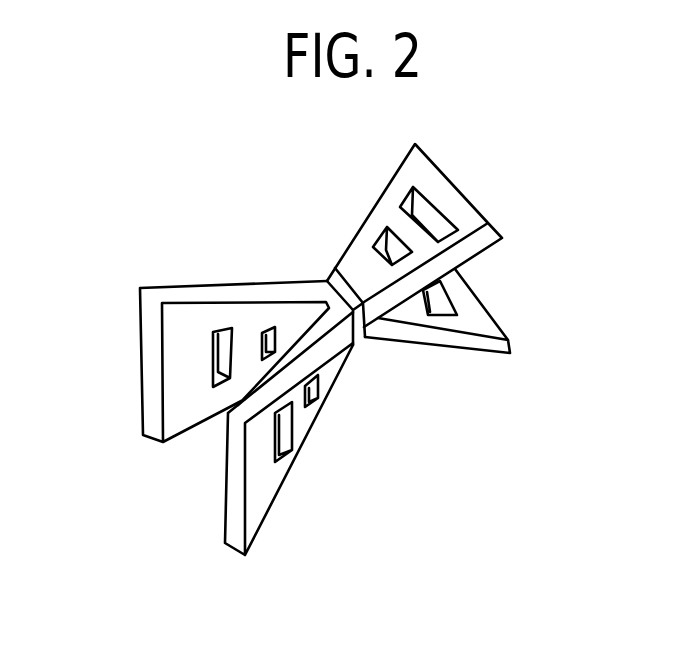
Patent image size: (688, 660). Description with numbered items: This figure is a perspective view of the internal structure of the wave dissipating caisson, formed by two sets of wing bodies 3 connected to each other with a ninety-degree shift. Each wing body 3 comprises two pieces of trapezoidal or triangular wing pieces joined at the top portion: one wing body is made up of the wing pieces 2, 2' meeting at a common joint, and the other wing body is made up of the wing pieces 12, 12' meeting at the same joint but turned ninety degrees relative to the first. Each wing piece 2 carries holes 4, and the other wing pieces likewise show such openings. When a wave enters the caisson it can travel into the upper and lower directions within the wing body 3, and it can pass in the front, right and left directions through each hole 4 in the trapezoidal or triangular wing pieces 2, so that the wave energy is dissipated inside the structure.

The wing piece 2 is at (255, 433).
The wing piece 2' is at (221, 393).
The wing body 3 is at (562, 208).
The hole 4 is at (287, 444).
The wing piece 12 is at (459, 311).
The wing piece 12' is at (443, 235).